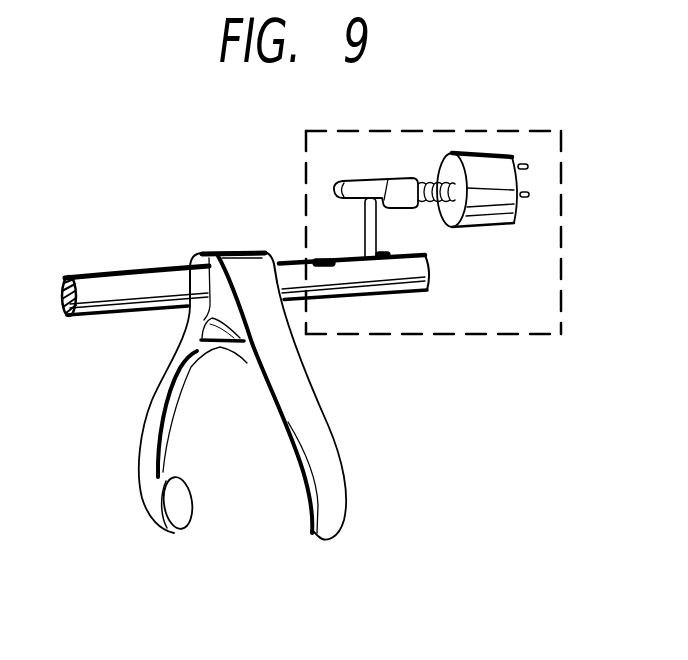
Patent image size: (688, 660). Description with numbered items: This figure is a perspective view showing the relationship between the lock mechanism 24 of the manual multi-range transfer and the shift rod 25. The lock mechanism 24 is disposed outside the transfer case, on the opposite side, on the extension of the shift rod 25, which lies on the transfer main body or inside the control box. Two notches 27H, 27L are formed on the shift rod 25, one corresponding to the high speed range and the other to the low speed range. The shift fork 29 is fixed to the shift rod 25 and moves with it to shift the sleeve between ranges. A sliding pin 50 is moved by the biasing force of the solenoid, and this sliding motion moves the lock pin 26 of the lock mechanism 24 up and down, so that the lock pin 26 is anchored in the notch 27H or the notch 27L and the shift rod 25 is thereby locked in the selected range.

The lock mechanism 24 is at (488, 170).
The shift rod 25 is at (115, 292).
The lock pin 26 is at (363, 222).
The notch 27H is at (320, 257).
The notch 27L is at (387, 252).
The shift fork 29 is at (308, 400).
The sliding pin 50 is at (388, 186).